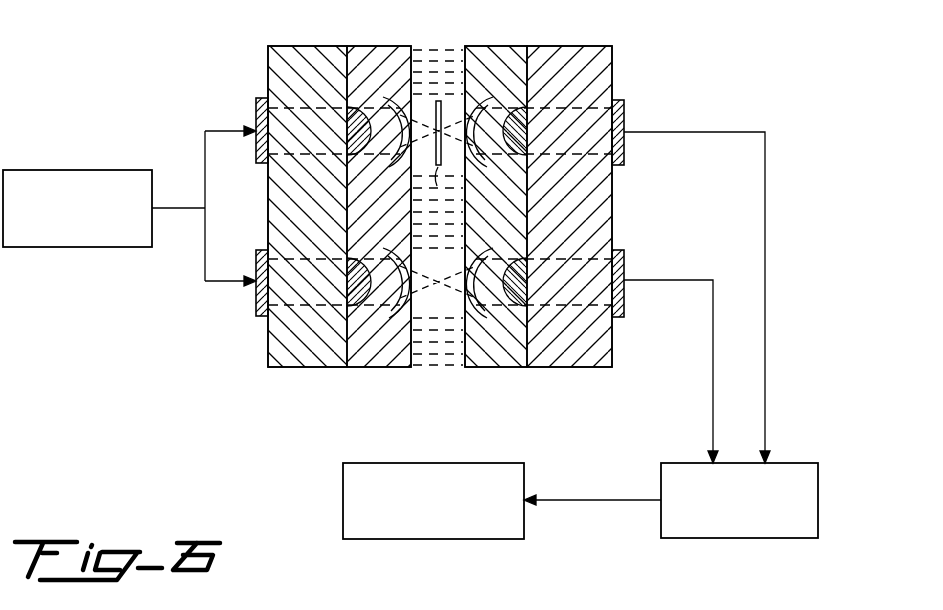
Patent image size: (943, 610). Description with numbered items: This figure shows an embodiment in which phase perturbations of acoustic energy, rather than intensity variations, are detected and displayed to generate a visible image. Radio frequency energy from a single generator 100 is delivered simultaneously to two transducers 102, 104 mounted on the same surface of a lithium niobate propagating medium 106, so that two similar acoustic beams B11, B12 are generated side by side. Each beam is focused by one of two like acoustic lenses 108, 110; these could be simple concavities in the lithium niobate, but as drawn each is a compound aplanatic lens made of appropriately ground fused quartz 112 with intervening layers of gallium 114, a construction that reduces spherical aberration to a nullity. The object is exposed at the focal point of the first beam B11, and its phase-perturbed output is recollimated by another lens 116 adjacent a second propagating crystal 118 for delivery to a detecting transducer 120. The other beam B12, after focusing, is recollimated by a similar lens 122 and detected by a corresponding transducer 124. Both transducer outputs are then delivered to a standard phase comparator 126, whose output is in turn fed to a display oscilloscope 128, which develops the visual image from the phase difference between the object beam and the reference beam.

The generator 100 is at (59, 170).
The transducer 102 is at (257, 150).
The transducer 104 is at (257, 308).
The lithium niobate propagating medium 106 is at (270, 52).
The acoustic lens 108 is at (376, 96).
The acoustic lens 110 is at (373, 312).
The fused quartz 112 is at (396, 158).
The gallium layers 114 is at (405, 114).
The lens 116 is at (492, 96).
The propagating crystal 118 is at (588, 50).
The detecting transducer 120 is at (626, 100).
The lens 122 is at (498, 312).
The transducer 124 is at (626, 250).
The phase comparator 126 is at (796, 463).
The display oscilloscope 128 is at (506, 463).
The acoustic beam B11 is at (293, 107).
The acoustic beam B12 is at (293, 253).